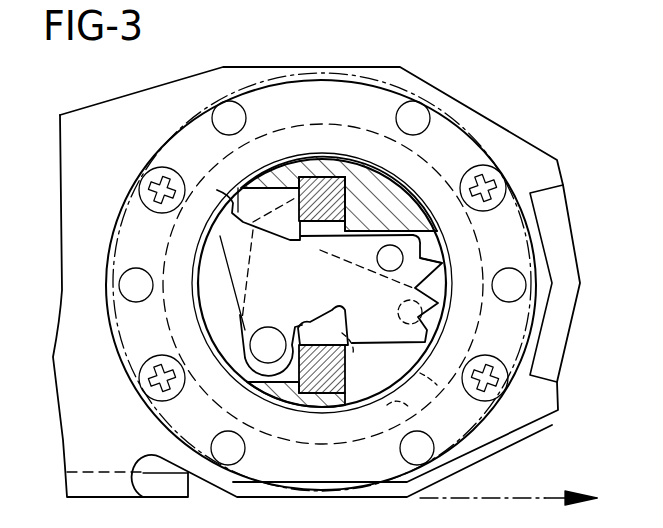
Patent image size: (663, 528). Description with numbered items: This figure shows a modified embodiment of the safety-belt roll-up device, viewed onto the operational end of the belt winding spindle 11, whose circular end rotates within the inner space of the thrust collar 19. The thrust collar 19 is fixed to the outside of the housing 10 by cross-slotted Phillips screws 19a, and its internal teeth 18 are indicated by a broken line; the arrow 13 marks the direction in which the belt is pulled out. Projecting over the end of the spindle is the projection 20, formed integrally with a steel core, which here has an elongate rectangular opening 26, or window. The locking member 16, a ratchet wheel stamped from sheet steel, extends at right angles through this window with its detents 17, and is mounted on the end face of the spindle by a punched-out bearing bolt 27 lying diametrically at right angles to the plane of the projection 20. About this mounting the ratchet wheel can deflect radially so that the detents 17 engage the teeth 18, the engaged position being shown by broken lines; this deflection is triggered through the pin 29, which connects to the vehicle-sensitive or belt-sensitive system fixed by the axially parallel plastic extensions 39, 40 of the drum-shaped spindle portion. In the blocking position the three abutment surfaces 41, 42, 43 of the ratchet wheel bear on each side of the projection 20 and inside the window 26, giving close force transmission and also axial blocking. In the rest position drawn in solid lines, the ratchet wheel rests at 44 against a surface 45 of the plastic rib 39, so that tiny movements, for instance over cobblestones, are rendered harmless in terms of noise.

The housing 10 is at (72, 144).
The belt winding spindle 11 is at (410, 392).
The arrow 13 is at (540, 498).
The locking member 16 is at (222, 235).
The detents 17 is at (445, 265).
The teeth 18 is at (297, 122).
The thrust collar 19 is at (267, 92).
The Phillips screws 19a is at (162, 168).
The projection 20 is at (310, 180).
The opening 26 is at (325, 332).
The bearing bolt 27 is at (275, 333).
The pin 29 is at (400, 256).
The axially parallel extension 39 is at (363, 162).
The axially parallel extension 40 is at (273, 398).
The abutment surface 41 is at (228, 183).
The abutment surface 42 is at (352, 340).
The abutment surface 43 is at (320, 318).
The resting point 44 is at (385, 165).
The surface 45 is at (420, 247).